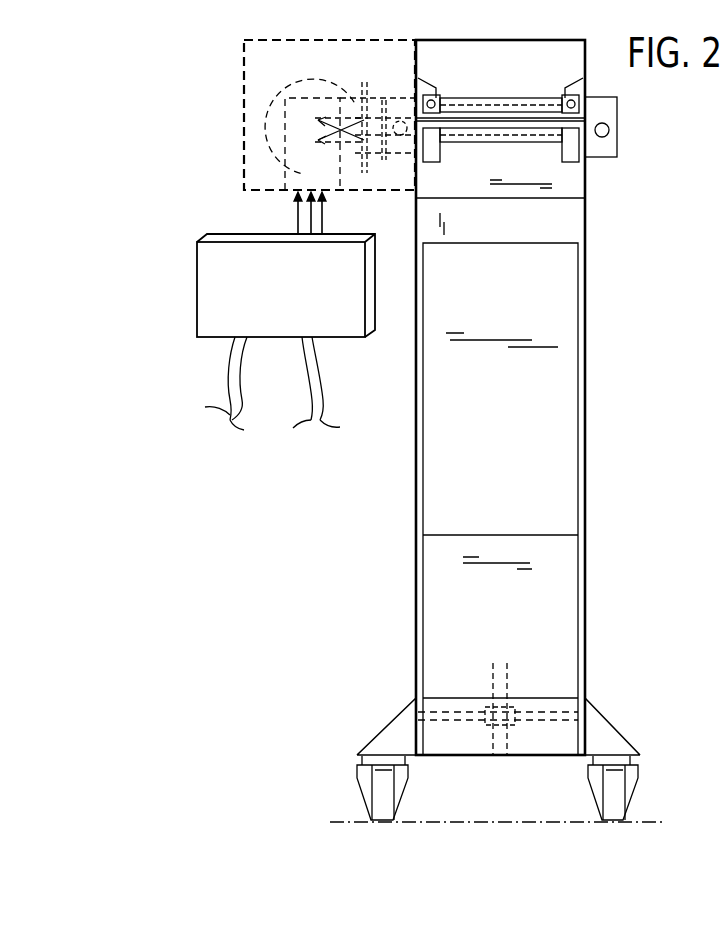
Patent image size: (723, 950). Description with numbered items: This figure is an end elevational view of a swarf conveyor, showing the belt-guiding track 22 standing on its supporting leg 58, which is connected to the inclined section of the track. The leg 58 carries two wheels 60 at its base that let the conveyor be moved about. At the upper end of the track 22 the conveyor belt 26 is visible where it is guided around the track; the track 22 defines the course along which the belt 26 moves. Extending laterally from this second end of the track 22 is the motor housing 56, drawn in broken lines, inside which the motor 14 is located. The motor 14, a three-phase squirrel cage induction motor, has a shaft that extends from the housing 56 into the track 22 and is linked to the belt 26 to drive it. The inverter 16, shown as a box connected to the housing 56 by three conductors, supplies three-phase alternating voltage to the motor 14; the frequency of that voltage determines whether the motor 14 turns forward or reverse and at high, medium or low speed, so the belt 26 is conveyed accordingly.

The motor 14 is at (312, 78).
The inverter 16 is at (212, 258).
The belt-guiding track 22 is at (585, 221).
The conveyor belt 26 is at (513, 98).
The motor housing 56 is at (382, 54).
The leg 58 is at (585, 489).
The wheels 60 is at (610, 787).